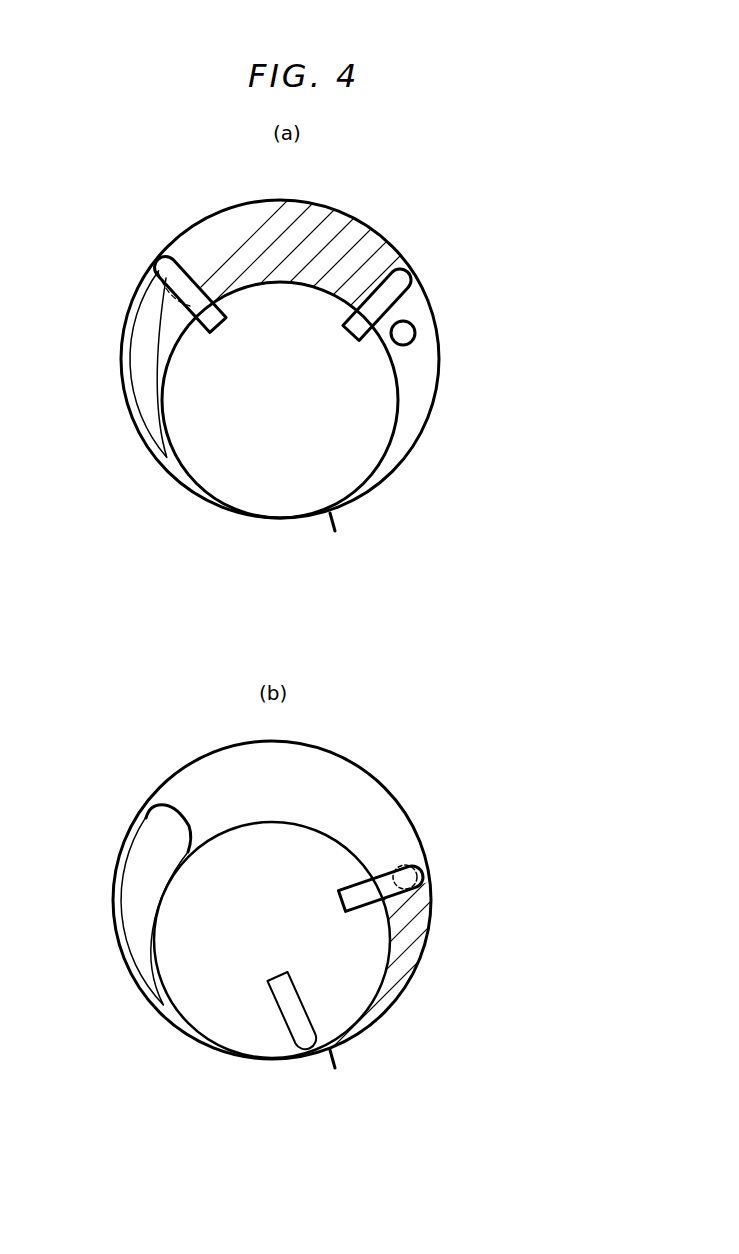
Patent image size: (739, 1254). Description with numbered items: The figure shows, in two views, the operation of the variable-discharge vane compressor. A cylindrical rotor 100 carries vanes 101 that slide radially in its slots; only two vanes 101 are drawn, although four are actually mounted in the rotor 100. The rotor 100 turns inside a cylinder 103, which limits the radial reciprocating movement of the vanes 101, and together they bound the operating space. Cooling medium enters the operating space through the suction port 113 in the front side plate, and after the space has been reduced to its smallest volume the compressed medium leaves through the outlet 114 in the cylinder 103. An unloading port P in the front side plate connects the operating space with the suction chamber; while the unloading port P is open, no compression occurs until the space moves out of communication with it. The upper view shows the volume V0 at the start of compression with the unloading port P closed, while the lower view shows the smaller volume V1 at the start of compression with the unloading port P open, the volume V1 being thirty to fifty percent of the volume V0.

The rotor 100 is at (392, 440).
The vane 101 is at (168, 267).
The cylinder 103 is at (437, 380).
The suction port 113 is at (131, 346).
The outlet 114 is at (344, 512).
The unloading port P is at (415, 333).
The volume V0 is at (295, 225).
The volume V1 is at (417, 938).